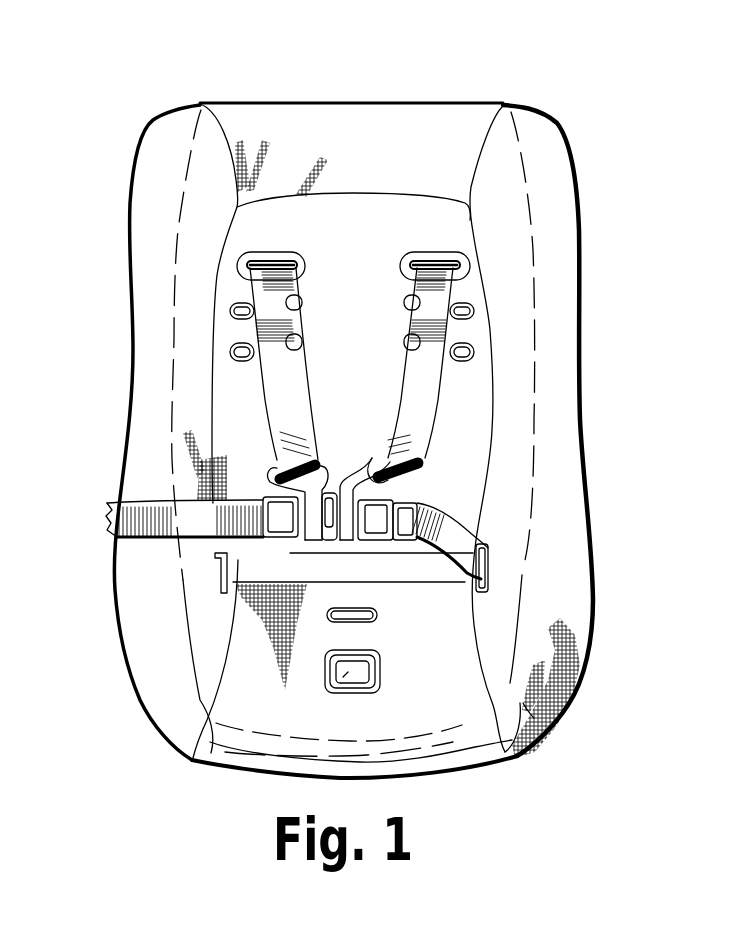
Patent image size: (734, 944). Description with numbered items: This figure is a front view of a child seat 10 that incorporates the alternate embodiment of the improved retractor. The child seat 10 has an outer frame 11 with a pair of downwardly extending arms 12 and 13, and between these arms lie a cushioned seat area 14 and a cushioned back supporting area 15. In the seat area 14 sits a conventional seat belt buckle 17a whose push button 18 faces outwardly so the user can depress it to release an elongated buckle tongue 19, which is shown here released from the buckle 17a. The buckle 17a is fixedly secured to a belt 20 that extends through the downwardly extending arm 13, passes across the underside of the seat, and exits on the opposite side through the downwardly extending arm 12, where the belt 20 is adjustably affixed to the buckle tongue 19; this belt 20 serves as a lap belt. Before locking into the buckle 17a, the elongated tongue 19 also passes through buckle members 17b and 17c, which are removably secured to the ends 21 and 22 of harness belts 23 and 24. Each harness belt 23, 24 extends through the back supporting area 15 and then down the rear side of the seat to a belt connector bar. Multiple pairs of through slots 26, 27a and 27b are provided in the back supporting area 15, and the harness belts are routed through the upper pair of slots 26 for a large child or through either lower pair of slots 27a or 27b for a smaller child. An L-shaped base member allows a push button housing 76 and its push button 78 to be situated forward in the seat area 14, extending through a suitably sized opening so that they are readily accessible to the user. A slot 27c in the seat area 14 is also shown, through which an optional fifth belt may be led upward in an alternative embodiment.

The child seat 10 is at (607, 103).
The outer frame 11 is at (148, 237).
The downwardly extending arm 12 is at (163, 690).
The downwardly extending arm 13 is at (545, 717).
The cushioned seat area 14 is at (430, 627).
The cushioned back supporting area 15 is at (350, 210).
The seat belt buckle 17a is at (428, 508).
The buckle member 17b is at (305, 484).
The buckle member 17c is at (365, 462).
The push button 18 is at (423, 508).
The buckle tongue 19 is at (333, 479).
The belt 20 is at (236, 554).
The end of harness belt 21 is at (273, 463).
The end of harness belt 22 is at (398, 457).
The harness belt 23 is at (260, 267).
The harness belt 24 is at (455, 265).
The through slots 26 is at (303, 254).
The through slots 27a is at (405, 300).
The through slots 27b is at (300, 343).
The slot 27c is at (335, 620).
The push button housing 76 is at (380, 668).
The push button 78 is at (343, 677).